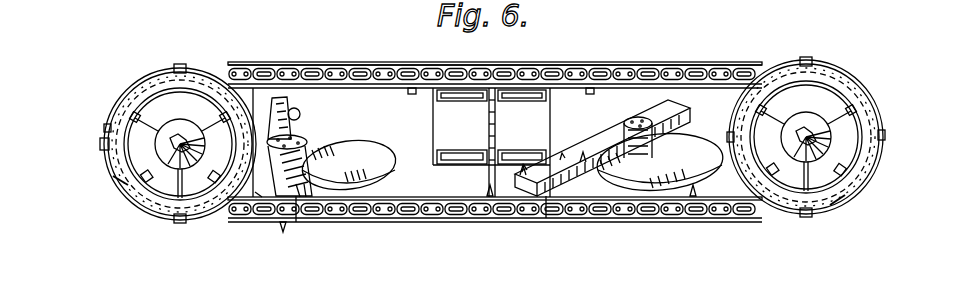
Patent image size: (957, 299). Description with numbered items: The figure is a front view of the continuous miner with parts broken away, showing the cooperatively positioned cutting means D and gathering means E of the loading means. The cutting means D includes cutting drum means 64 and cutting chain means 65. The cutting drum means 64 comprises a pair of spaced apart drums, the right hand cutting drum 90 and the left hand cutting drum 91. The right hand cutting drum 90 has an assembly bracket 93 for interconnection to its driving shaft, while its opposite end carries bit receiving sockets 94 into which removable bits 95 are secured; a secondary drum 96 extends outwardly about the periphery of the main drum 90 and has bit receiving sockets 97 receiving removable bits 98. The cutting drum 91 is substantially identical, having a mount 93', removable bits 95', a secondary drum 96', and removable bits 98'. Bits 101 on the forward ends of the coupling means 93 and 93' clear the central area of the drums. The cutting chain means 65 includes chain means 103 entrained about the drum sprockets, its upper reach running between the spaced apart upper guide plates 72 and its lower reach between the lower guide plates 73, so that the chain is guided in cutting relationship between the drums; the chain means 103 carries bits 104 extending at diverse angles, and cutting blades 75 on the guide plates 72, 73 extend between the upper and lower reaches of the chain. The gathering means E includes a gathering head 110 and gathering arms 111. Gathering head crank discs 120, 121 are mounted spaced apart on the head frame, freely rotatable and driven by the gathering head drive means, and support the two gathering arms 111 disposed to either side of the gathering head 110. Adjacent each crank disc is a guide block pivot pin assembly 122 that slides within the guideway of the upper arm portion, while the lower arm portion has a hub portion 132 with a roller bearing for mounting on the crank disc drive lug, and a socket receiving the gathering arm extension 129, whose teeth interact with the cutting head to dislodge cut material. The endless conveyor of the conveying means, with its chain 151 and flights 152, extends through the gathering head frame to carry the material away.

The cutting drum means 64 is at (133, 72).
The cutting chain means 65 is at (597, 54).
The upper guide plates 72 is at (404, 68).
The lower guide plates 73 is at (430, 215).
The cutting blades 75 is at (412, 88).
The right hand cutting drum 90 is at (105, 127).
The left hand cutting drum 91 is at (881, 121).
The assembly bracket 93 is at (166, 144).
The mount 93' is at (806, 147).
The bit receiving sockets 94 is at (212, 151).
The removable bits 95 is at (180, 144).
The removable bits 95' is at (806, 137).
The secondary drum 96 is at (170, 153).
The secondary drum 96' is at (829, 137).
The bit receiving sockets 97 is at (179, 221).
The removable bits 98 is at (129, 103).
The removable bits 98' is at (780, 136).
The bits 101 is at (113, 178).
The chain means 103 is at (333, 65).
The bits 104 is at (504, 76).
The gathering head 110 is at (378, 131).
The gathering arms 111 is at (304, 172).
The gathering head crank disc 120 is at (374, 156).
The gathering head crank disc 121 is at (690, 140).
The guide block pivot pin assembly 122 is at (298, 116).
The gathering arm extension 129 is at (300, 222).
The hub portion 132 is at (303, 140).
The chain 151 is at (488, 123).
The flights 152 is at (529, 99).
The cutting means D is at (718, 52).
The gathering means E is at (594, 188).